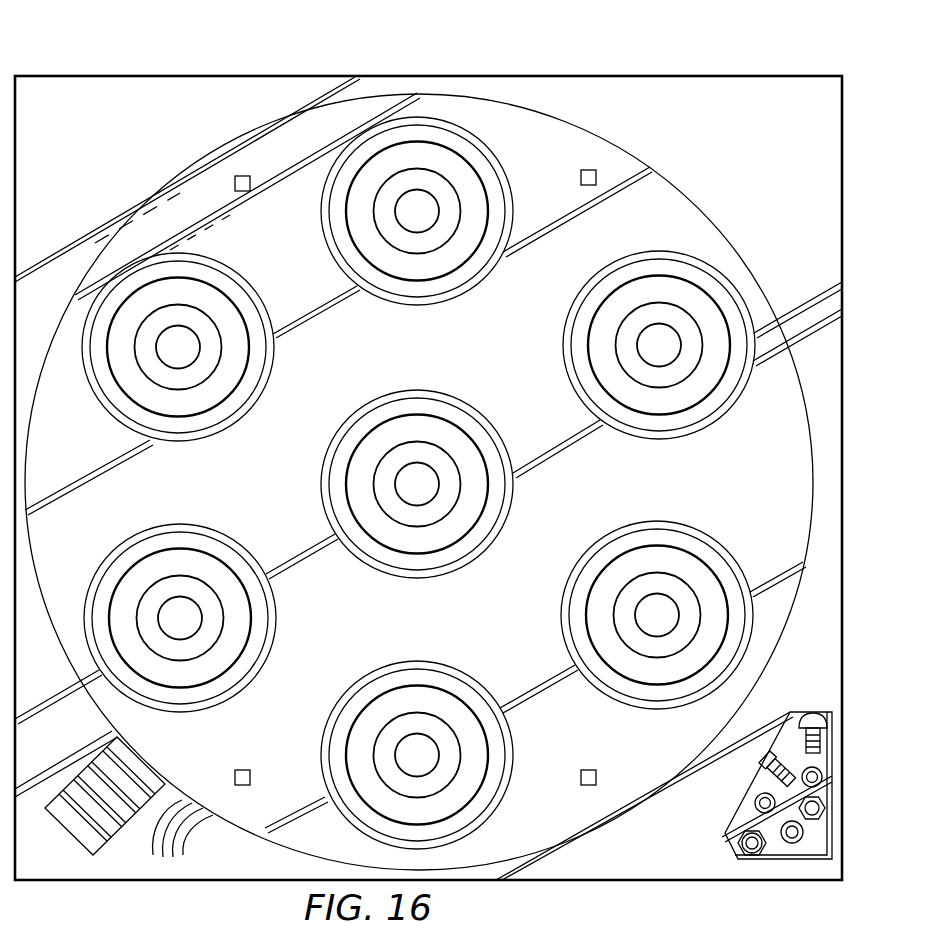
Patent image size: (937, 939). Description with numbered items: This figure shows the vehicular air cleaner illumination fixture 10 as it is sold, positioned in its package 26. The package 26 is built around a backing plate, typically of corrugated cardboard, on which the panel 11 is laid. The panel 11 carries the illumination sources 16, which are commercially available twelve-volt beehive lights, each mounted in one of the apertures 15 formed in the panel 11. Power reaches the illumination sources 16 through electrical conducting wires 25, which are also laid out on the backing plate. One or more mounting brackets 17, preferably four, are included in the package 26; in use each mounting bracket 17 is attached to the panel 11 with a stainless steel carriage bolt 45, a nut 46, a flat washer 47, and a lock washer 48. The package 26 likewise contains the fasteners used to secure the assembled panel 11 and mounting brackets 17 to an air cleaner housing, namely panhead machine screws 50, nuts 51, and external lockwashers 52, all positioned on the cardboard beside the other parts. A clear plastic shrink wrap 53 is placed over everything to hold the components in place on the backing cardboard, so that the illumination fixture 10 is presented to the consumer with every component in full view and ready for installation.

The vehicular air cleaner illumination fixture 10 is at (182, 66).
The panel 11 is at (259, 104).
The package 26 is at (533, 75).
The clear plastic shrink wrap 53 is at (618, 94).
The first apertures 15 is at (748, 306).
The first illumination sources 16 is at (697, 279).
The mounting brackets 17 is at (163, 797).
The electrical conducting wires 25 is at (222, 847).
The carriage bolt 45 is at (788, 714).
The nut 46 is at (757, 810).
The flat washer 47 is at (818, 802).
The lock washer 48 is at (792, 843).
The panhead machine screws 50 is at (818, 715).
The nuts 51 is at (800, 757).
The external lockwashers 52 is at (753, 852).